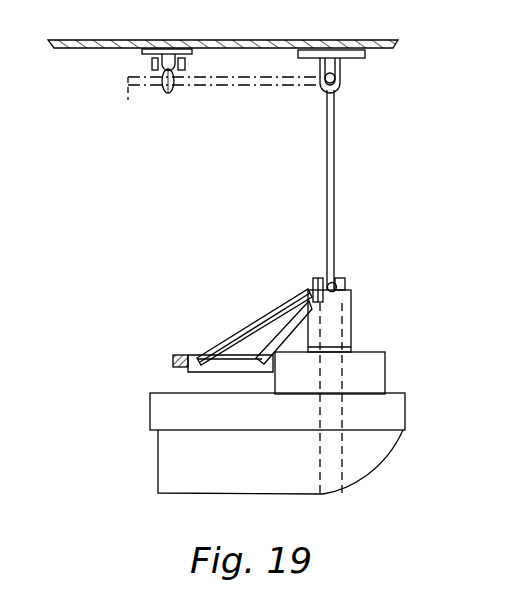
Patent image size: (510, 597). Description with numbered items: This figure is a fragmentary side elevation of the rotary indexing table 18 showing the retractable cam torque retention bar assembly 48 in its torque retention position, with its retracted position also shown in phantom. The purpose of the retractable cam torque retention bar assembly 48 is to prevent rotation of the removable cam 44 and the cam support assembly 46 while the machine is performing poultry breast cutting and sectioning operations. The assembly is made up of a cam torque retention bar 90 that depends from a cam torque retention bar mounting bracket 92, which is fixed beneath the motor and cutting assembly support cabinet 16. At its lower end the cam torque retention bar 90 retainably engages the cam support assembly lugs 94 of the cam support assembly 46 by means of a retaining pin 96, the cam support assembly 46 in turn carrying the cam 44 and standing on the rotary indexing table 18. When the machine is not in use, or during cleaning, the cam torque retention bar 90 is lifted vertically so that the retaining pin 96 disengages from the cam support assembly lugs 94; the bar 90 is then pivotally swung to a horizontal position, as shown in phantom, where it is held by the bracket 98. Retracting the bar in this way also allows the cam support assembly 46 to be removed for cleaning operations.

The motor and cutting assembly support cabinet 16 is at (88, 48).
The rotary indexing table 18 is at (150, 412).
The cam 44 is at (173, 360).
The cam support assembly 46 is at (250, 318).
The retractable cam torque retention bar assembly 48 is at (348, 140).
The cam torque retention bar 90 is at (230, 86).
The cam torque retention bar mounting bracket 92 is at (341, 74).
The cam support assembly lugs 94 is at (313, 282).
The retaining pin 96 is at (127, 100).
The bracket 98 is at (168, 93).